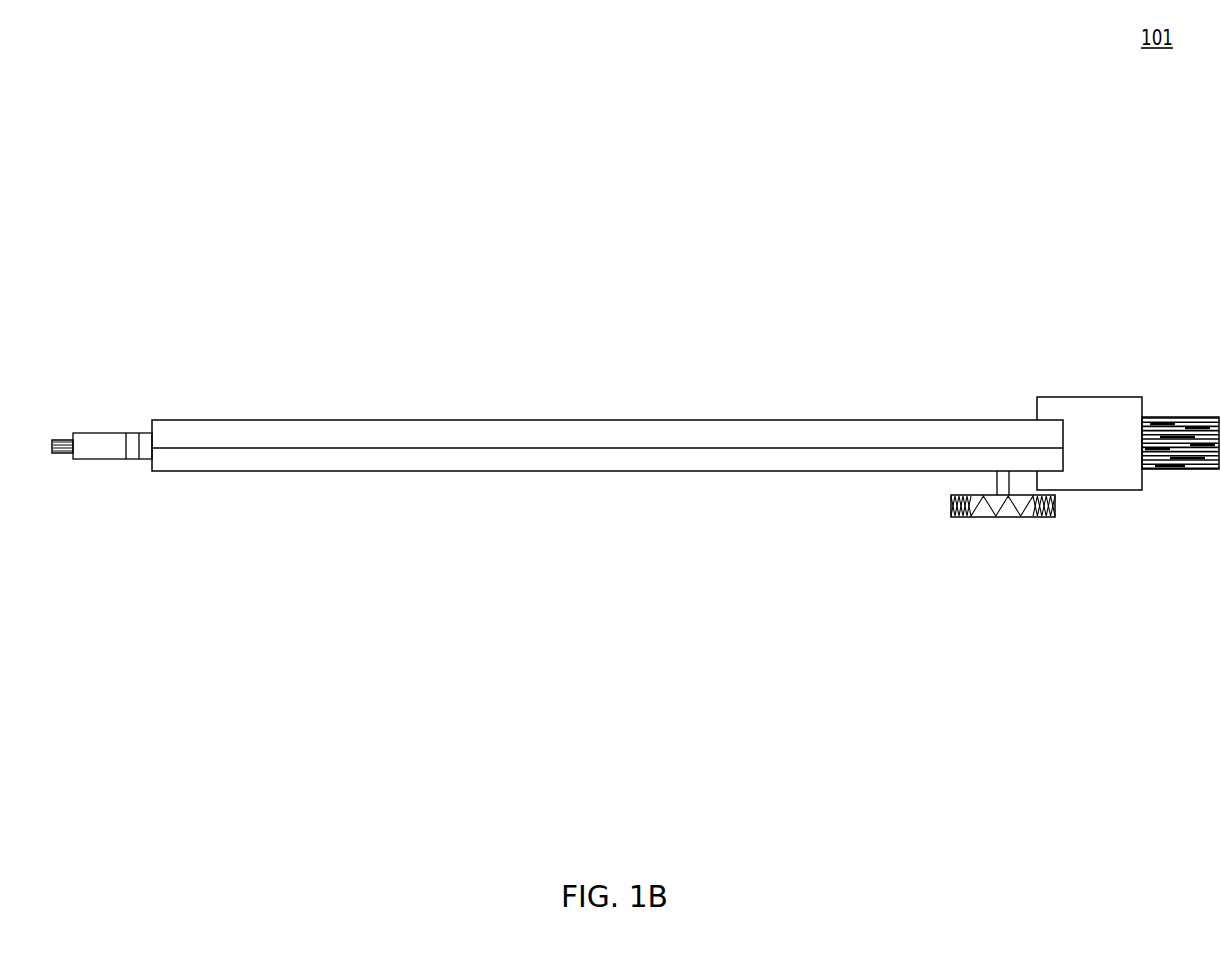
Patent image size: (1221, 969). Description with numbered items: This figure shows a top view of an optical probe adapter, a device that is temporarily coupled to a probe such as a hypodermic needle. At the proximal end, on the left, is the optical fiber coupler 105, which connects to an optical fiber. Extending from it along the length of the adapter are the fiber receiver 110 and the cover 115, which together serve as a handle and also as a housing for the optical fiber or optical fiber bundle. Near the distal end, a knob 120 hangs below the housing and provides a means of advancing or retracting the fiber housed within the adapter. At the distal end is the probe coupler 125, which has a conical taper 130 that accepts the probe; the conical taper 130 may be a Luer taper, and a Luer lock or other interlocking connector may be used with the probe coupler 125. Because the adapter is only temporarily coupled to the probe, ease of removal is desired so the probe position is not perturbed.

The optical fiber coupler 105 is at (80, 451).
The fiber receiver 110 is at (356, 428).
The cover 115 is at (562, 463).
The knob 120 is at (1002, 517).
The probe coupler 125 is at (1099, 475).
The conical taper 130 is at (1165, 417).